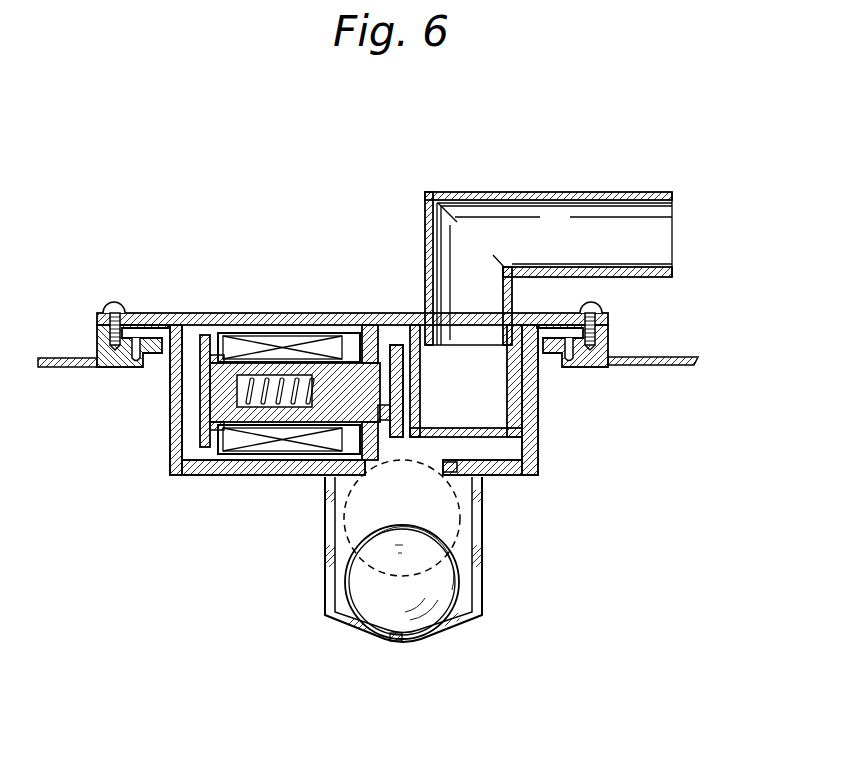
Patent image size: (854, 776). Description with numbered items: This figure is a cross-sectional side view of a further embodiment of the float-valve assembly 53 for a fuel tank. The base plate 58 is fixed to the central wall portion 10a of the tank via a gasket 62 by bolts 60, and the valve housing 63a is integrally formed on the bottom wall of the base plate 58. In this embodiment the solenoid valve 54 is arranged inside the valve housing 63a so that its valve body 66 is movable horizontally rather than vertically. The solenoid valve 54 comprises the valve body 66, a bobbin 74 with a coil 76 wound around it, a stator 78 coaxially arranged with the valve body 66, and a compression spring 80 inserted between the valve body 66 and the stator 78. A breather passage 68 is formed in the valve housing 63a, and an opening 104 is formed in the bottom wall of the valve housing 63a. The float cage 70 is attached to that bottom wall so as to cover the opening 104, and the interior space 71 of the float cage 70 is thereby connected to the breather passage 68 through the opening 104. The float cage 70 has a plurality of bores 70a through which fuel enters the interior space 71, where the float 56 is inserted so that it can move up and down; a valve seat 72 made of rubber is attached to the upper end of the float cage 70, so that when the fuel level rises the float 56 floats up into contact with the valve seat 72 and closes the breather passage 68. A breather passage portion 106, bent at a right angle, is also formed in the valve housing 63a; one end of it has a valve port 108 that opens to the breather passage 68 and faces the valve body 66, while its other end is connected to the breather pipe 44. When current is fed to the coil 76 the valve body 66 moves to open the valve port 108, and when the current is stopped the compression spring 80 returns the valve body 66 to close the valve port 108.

The breather pipe 44 is at (427, 212).
The float-valve assembly 53 is at (309, 268).
The solenoid valve 54 is at (196, 446).
The float 56 is at (380, 632).
The base plate 58 is at (368, 326).
The bolts 60 is at (115, 303).
The gasket 62 is at (97, 327).
The valve housing 63a is at (172, 445).
The valve body 66 is at (316, 477).
The breather passage 68 is at (402, 325).
The float cage 70 is at (475, 618).
The bores 70a is at (325, 588).
The interior space 71 is at (345, 608).
The valve seat 72 is at (470, 483).
The bobbin 74 is at (252, 477).
The coil 76 is at (213, 476).
The stator 78 is at (215, 394).
The compression spring 80 is at (256, 385).
The opening 104 is at (397, 470).
The breather passage portion 106 is at (487, 398).
The valve port 108 is at (405, 346).
The central wall portion 10a is at (57, 365).